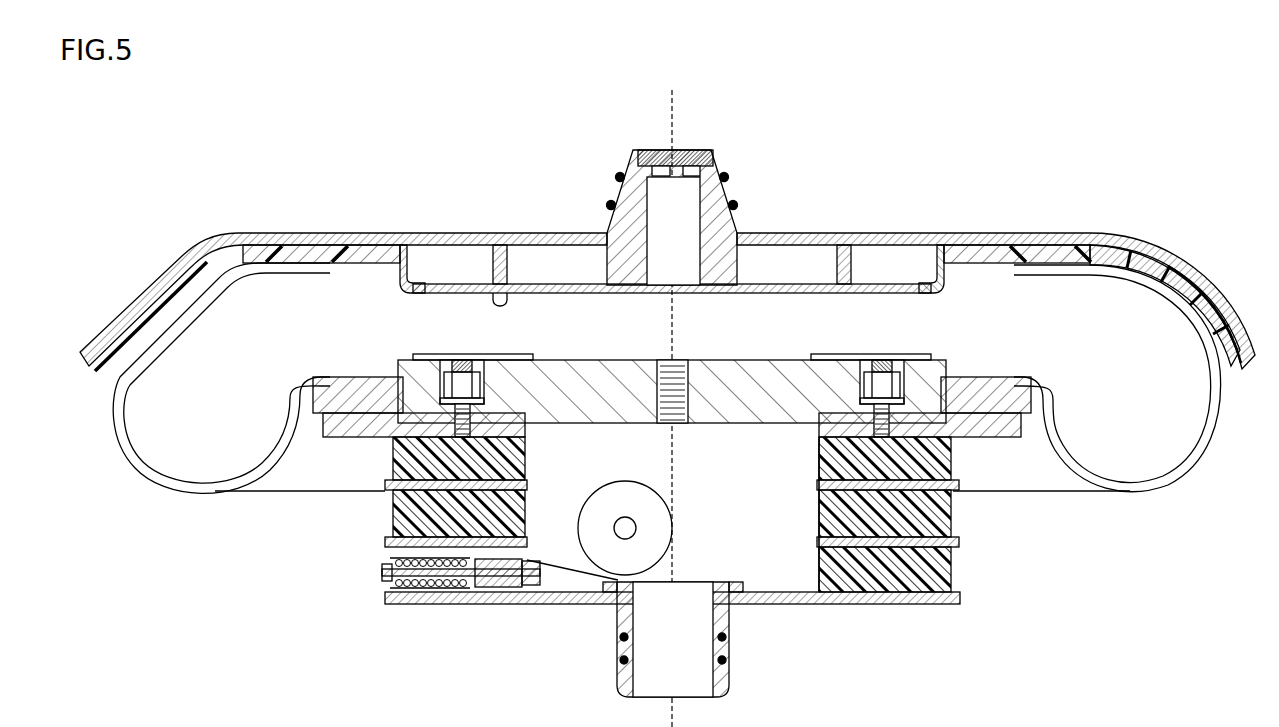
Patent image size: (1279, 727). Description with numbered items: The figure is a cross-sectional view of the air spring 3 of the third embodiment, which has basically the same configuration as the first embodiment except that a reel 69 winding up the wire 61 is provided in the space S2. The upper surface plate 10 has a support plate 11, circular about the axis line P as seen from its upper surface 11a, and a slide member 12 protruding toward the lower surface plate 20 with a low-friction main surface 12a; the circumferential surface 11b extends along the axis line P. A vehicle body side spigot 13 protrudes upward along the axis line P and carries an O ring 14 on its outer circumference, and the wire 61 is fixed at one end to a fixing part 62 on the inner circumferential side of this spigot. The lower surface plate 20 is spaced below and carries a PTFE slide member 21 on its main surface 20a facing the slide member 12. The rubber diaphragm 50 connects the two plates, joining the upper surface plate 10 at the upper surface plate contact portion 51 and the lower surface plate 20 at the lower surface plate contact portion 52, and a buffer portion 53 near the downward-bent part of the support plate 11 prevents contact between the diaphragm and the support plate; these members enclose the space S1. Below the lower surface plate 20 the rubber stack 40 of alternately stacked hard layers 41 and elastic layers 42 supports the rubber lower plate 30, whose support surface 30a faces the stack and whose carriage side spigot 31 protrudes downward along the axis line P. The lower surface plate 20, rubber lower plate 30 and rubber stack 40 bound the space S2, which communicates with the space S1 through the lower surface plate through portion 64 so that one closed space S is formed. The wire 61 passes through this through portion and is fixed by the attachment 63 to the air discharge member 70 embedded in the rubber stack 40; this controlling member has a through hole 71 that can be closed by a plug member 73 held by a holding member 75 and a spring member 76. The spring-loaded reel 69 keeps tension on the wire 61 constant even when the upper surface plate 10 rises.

The air spring 3 is at (1050, 130).
The upper surface plate 10 is at (915, 184).
The support plate 11 is at (260, 233).
The upper surface 11a is at (846, 262).
The circumferential surface 11b is at (392, 240).
The slide member 12 is at (455, 278).
The main surface 12a is at (494, 300).
The vehicle body side spigot 13 is at (710, 168).
The O ring 14 is at (728, 177).
The lower surface plate 20 is at (565, 395).
The main surface 20a is at (618, 352).
The slide member 21 is at (872, 365).
The rubber lower plate 30 is at (855, 600).
The support surface 30a is at (793, 578).
The carriage side spigot 31 is at (732, 660).
The rubber stack 40 is at (1008, 527).
The hard layer 41 is at (958, 545).
The elastic layer 42 is at (935, 572).
The diaphragm 50 is at (215, 493).
The upper surface plate contact portion 51 is at (378, 390).
The lower surface plate contact portion 52 is at (338, 256).
The buffer portion 53 is at (108, 374).
The wire 61 is at (676, 492).
The fixing part 62 is at (640, 165).
The attachment 63 is at (548, 592).
The lower surface plate through portion 64 is at (690, 385).
The reel 69 is at (622, 560).
The air discharge member 70 is at (380, 645).
The through hole 71 is at (485, 592).
The plug member 73 is at (523, 590).
The holding member 75 is at (403, 592).
The spring member 76 is at (432, 590).
The axis line P is at (672, 397).
The closed space S is at (932, 677).
The space S1 is at (1128, 430).
The space S2 is at (928, 598).